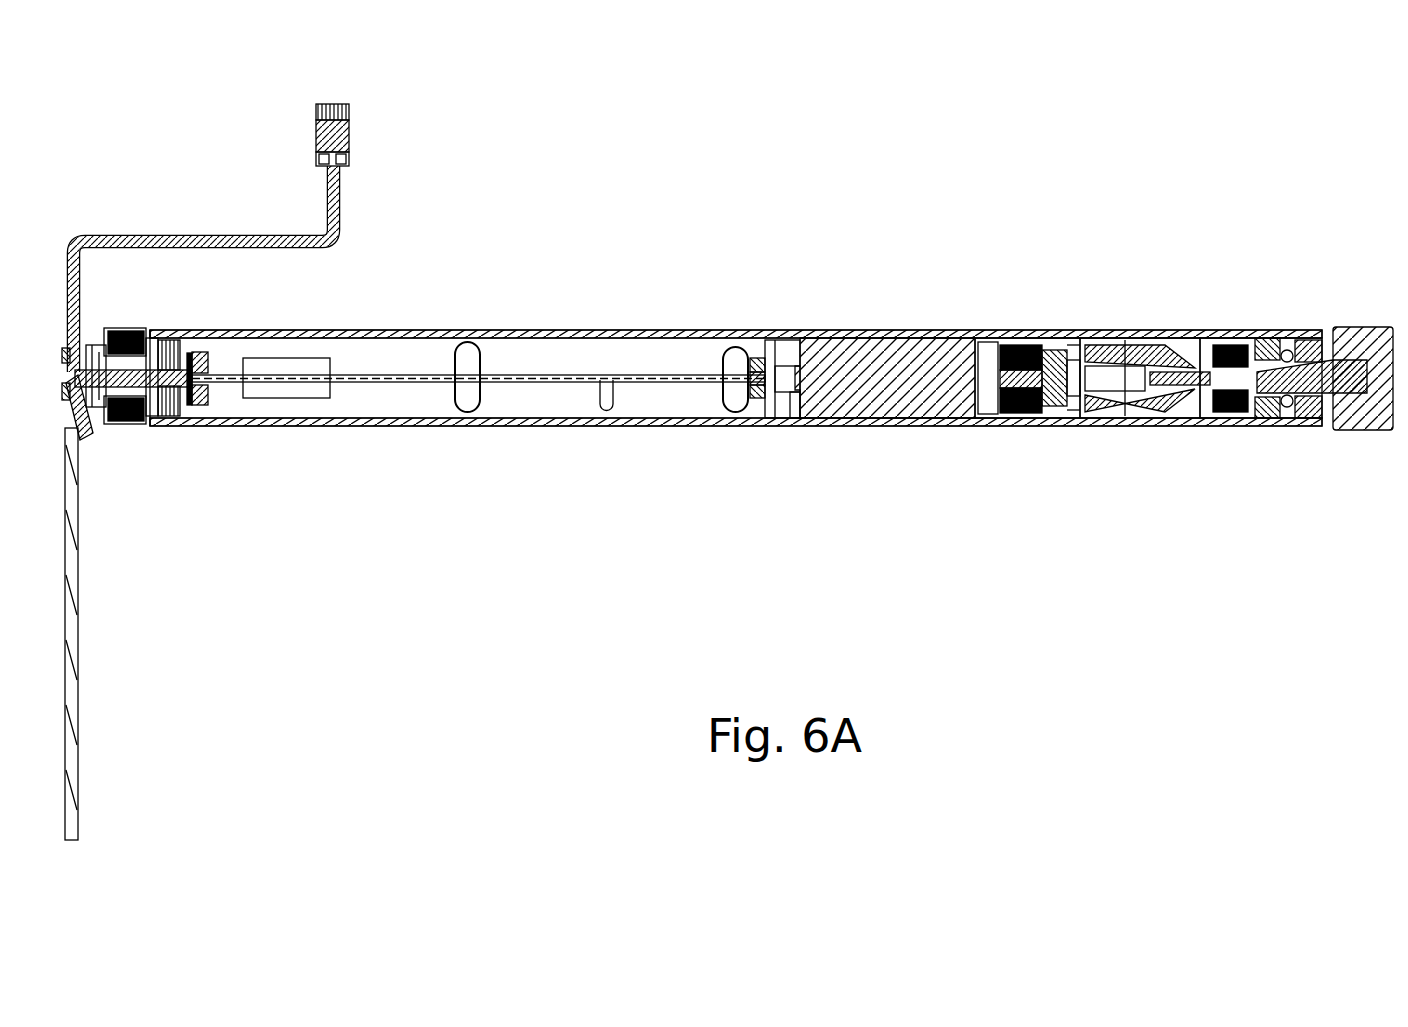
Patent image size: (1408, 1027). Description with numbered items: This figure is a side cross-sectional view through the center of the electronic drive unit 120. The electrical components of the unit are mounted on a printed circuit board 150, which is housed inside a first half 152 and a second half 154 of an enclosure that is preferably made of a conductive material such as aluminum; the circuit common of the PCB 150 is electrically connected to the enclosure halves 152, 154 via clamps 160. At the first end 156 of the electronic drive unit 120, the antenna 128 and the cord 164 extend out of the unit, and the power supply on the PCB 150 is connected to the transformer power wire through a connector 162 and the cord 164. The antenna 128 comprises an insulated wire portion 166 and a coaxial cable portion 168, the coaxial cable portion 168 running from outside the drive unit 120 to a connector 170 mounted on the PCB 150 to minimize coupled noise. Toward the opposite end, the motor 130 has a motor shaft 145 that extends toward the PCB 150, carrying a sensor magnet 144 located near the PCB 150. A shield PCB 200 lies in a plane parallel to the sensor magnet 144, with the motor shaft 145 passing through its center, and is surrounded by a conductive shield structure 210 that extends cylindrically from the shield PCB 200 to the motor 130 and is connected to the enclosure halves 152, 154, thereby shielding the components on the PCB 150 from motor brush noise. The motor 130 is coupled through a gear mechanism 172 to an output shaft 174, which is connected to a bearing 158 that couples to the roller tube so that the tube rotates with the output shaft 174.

The electronic drive unit 120 is at (783, 120).
The antenna 128 is at (107, 537).
The motor 130 is at (878, 365).
The sensor magnet 144 is at (755, 372).
The motor shaft 145 is at (770, 378).
The printed circuit board 150 is at (650, 380).
The first half of the enclosure 152 is at (575, 352).
The second half of the enclosure 154 is at (557, 400).
The first end 156 is at (125, 330).
The bearing 158 is at (1355, 432).
The clamps 160 is at (300, 358).
The connector 162 is at (350, 138).
The cord 164 is at (180, 235).
The insulated wire portion 166 is at (78, 483).
The coaxial cable portion 168 is at (82, 420).
The connector 170 is at (198, 355).
The gear mechanism 172 is at (1182, 405).
The output shaft 174 is at (1328, 355).
The shield PCB 200 is at (770, 420).
The shield structure 210 is at (793, 425).